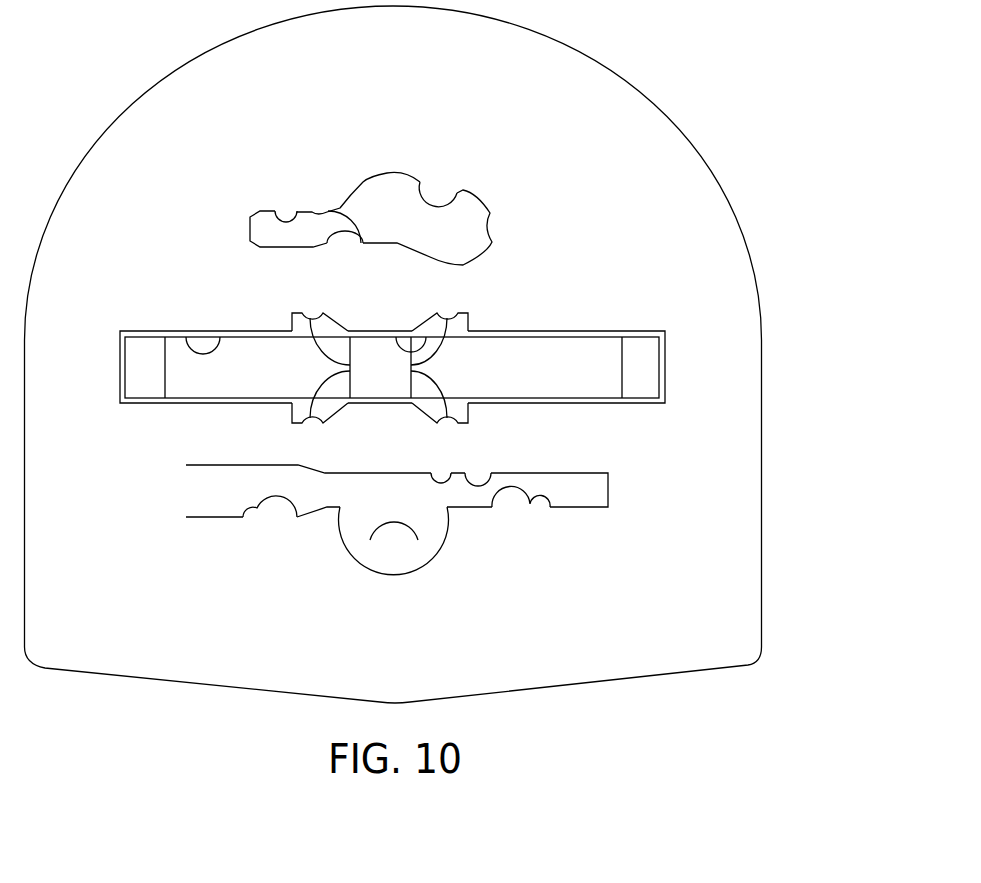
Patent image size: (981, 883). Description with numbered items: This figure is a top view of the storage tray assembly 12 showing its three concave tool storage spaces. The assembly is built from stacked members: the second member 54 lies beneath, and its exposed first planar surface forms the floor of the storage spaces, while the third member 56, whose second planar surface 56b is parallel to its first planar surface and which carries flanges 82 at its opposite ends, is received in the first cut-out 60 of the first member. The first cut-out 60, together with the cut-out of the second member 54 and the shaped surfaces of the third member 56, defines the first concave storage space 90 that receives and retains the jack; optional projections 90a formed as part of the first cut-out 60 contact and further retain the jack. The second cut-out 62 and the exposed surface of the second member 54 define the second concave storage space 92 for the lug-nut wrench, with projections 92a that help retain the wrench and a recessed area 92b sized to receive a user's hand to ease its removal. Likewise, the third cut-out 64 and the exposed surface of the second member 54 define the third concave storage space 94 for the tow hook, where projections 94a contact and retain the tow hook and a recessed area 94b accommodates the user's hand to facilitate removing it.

The housing 12 is at (690, 57).
The second member 54 is at (393, 192).
The third cut-out 64 is at (279, 212).
The third concave storage space 94 is at (365, 208).
The projections 94a is at (362, 245).
The recessed area 94b is at (448, 200).
The third member 56 is at (570, 367).
The second planar surface 56b is at (520, 335).
The flanges 82 is at (147, 359).
The first concave storage space 90 is at (220, 338).
The projections 90a is at (350, 365).
The first cut-out 60 is at (400, 345).
The second concave storage space 92 is at (213, 495).
The projections 92a is at (293, 505).
The recessed area 92b is at (370, 540).
The second cut-out 62 is at (492, 477).